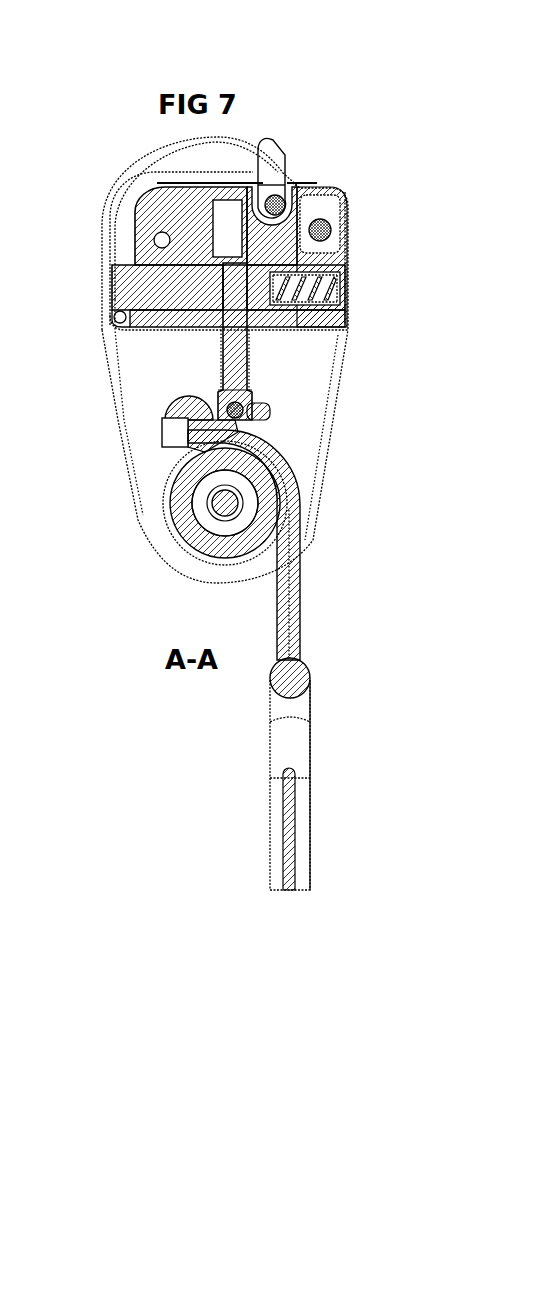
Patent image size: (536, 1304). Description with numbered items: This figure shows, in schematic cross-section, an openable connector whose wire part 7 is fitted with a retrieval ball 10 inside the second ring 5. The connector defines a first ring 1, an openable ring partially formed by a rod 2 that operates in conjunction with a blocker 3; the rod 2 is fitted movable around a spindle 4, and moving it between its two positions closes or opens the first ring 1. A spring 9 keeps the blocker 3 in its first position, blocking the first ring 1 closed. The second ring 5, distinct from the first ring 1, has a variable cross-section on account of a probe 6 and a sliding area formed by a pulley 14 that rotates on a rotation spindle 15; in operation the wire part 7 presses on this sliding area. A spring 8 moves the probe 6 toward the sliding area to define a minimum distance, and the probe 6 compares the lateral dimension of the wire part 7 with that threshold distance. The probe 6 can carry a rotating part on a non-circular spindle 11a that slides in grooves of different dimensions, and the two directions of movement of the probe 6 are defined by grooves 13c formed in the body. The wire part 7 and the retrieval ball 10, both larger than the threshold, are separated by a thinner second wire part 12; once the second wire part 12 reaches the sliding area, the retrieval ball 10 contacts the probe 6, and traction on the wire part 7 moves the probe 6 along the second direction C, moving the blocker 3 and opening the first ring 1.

The direction of cable/actuation C is at (265, 113).
The first ring 1 is at (135, 158).
The rod 2 is at (267, 173).
The blocker 3 is at (112, 292).
The spindle 4 is at (278, 205).
The second ring 5 is at (128, 445).
The probe 6 is at (240, 370).
The wire part 7 is at (292, 742).
The spring 8 is at (252, 345).
The spring 9 is at (318, 288).
The retrieval ball 10 is at (168, 452).
The spindle 11a is at (226, 407).
The second wire part 12 is at (280, 660).
The grooves 13c is at (264, 410).
The pulley 14 is at (178, 505).
The rotation spindle 15 is at (230, 495).